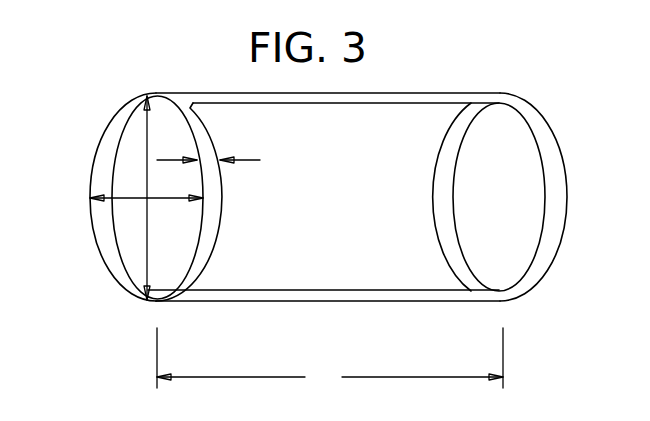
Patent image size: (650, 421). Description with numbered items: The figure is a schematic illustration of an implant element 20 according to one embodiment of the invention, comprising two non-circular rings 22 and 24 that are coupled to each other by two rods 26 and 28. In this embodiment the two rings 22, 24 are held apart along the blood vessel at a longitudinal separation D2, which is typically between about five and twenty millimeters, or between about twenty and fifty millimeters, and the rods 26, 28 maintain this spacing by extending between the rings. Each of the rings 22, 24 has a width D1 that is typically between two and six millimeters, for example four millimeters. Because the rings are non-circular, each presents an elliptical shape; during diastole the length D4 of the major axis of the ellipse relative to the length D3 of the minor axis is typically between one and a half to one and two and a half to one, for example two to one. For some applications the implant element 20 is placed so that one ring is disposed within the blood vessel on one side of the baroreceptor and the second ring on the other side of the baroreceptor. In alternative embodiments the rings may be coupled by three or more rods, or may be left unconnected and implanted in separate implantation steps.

The implant element 20 is at (316, 177).
The non-circular ring 22 is at (195, 275).
The non-circular ring 24 is at (543, 252).
The rod 26 is at (330, 99).
The rod 28 is at (343, 293).
The width D1 is at (207, 158).
The longitudinal separation D2 is at (330, 359).
The length of the minor axis D3 is at (160, 200).
The length of the major axis D4 is at (147, 155).